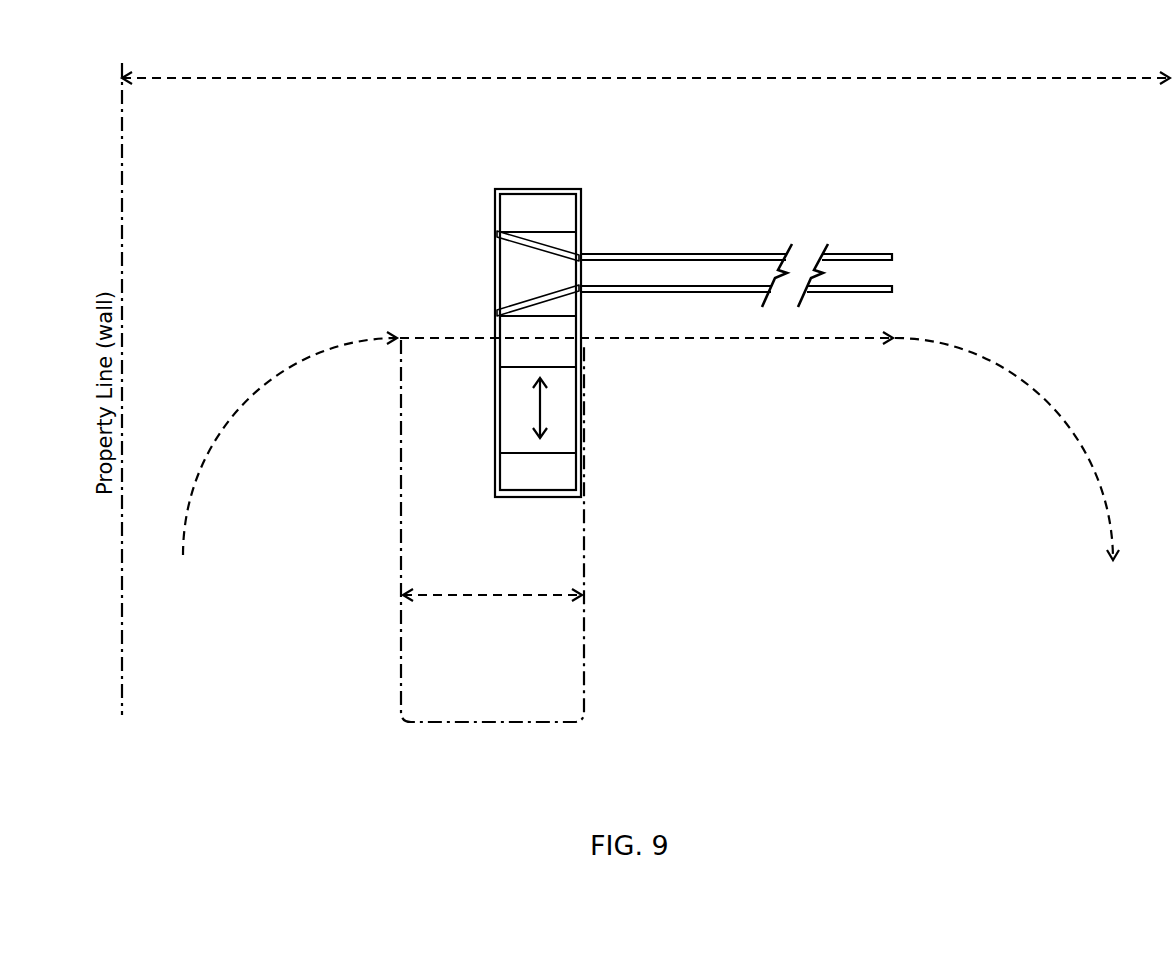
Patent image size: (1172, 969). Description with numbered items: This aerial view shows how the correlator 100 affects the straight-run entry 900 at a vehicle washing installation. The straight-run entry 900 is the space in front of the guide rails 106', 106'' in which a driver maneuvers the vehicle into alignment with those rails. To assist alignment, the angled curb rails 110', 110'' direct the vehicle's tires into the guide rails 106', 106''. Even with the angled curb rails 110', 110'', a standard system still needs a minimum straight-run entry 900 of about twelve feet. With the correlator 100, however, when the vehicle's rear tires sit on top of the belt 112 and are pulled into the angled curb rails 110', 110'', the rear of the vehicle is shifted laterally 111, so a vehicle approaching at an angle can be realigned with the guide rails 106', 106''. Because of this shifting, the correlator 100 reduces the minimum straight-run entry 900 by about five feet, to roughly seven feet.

The correlator 100 is at (580, 213).
The angled curb rail 110' is at (439, 192).
The angled curb rail 110'' is at (415, 301).
The belt 112 is at (520, 265).
The guide rail 106' is at (736, 217).
The guide rail 106'' is at (736, 365).
The lateral shift 111 is at (541, 408).
The straight-run entry 900 is at (493, 722).